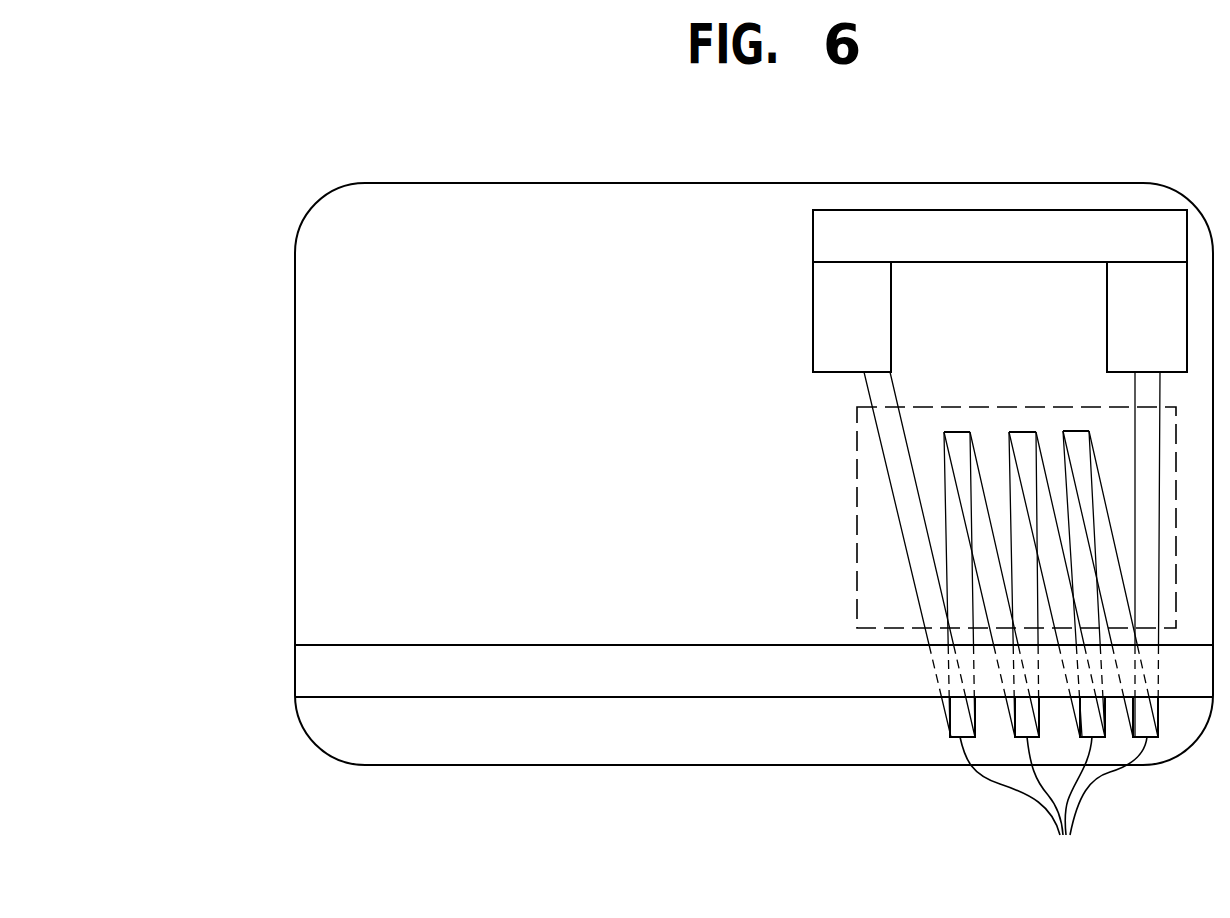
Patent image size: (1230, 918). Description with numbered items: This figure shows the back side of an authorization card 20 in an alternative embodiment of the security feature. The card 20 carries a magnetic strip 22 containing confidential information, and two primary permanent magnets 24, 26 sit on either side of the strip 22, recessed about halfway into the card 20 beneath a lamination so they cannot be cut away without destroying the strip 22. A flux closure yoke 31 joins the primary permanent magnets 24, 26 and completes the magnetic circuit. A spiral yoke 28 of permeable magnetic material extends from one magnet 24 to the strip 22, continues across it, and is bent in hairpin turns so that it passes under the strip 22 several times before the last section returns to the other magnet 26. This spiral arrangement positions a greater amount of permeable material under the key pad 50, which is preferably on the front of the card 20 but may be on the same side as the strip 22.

The authorization card 20 is at (747, 208).
The magnetic strip 22 is at (708, 697).
The primary permanent magnet 24 is at (812, 312).
The primary permanent magnet 26 is at (1106, 312).
The yoke 28 is at (1053, 809).
The flux closure yoke 31 is at (1005, 225).
The key pad 50 is at (857, 503).